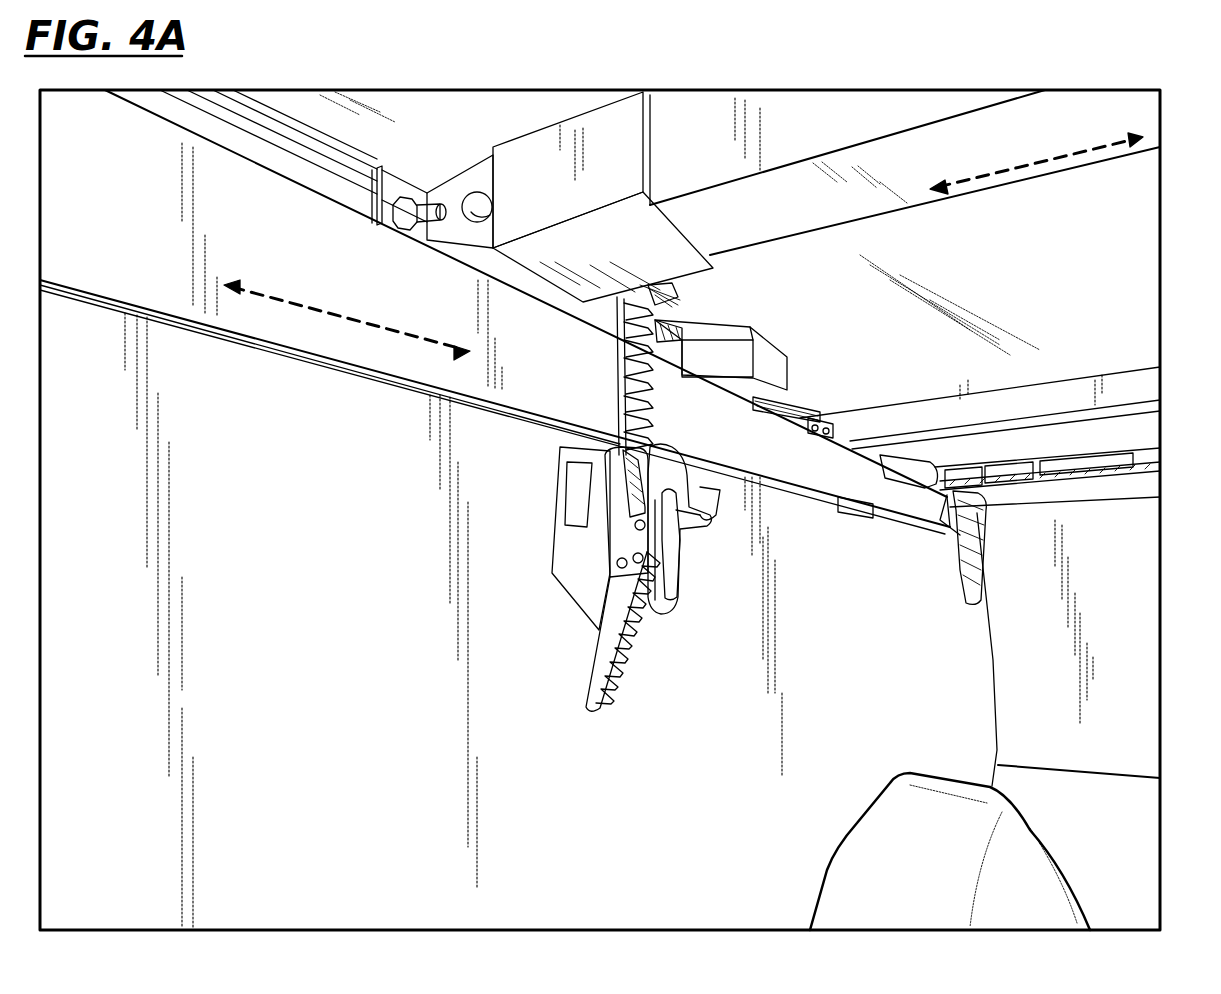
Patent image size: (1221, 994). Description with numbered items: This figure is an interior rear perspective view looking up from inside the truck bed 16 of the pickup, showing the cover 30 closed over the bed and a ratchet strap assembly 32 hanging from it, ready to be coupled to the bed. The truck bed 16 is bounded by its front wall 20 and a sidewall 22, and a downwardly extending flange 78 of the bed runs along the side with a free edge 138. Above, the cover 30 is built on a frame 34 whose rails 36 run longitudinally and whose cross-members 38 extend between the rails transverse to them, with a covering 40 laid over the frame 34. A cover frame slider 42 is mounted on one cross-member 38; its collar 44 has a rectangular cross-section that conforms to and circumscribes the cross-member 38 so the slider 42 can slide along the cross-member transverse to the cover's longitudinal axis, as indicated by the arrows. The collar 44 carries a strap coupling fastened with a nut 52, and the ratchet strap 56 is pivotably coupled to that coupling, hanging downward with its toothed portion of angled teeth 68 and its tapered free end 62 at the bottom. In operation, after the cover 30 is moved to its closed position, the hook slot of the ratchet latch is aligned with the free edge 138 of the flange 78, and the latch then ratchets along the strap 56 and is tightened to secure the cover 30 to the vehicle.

The truck bed 16 is at (1142, 565).
The front wall 20 is at (1079, 671).
The sidewall 22 is at (950, 721).
The cover 30 is at (1142, 212).
The ratchet strap assembly 32 is at (945, 552).
The frame 34 is at (845, 122).
The rail 36 is at (243, 112).
The cross-member 38 is at (1137, 388).
The covering 40 is at (1056, 244).
The cover frame slider 42 is at (722, 270).
The collar 44 is at (553, 197).
The nut 52 is at (678, 290).
The ratchet strap 56 is at (590, 688).
The free end 62 is at (620, 705).
The teeth 68 is at (630, 638).
The downwardly extending flange 78 is at (495, 407).
The free edge 138 is at (348, 368).